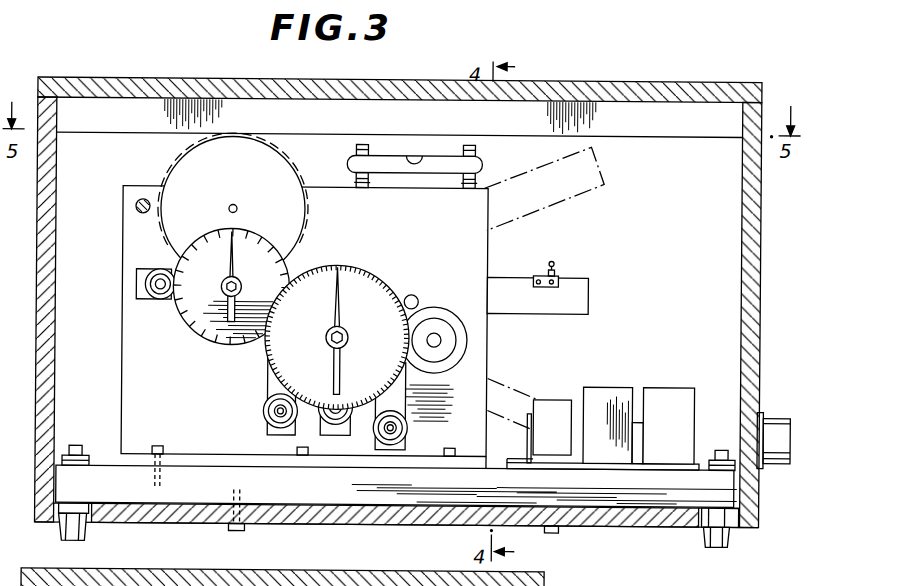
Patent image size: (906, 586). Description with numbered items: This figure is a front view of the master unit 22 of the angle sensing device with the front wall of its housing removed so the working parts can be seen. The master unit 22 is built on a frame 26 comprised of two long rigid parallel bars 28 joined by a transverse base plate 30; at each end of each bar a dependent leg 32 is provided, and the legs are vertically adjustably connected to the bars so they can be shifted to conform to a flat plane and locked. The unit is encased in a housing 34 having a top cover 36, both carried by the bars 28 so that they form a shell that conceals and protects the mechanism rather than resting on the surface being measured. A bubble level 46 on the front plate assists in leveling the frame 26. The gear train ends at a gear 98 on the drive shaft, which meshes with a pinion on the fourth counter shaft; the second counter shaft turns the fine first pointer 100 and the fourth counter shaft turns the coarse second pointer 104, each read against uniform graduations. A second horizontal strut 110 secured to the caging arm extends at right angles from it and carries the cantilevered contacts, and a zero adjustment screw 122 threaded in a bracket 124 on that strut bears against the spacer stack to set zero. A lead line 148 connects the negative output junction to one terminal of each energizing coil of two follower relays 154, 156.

The master unit 22 is at (688, 535).
The frame 26 is at (102, 464).
The bars 28 is at (405, 496).
The base plate 30 is at (219, 432).
The dependent leg 32 is at (726, 536).
The housing 34 is at (760, 289).
The top cover 36 is at (710, 90).
The bubble level 46 is at (415, 152).
The gear 98 is at (298, 171).
The first pointer 100 is at (342, 317).
The second pointer 104 is at (237, 262).
The second horizontal strut 110 is at (600, 163).
The zero adjustment screw 122 is at (557, 261).
The bracket 124 is at (540, 272).
The lead line 148 is at (558, 397).
The follower relay 154 is at (612, 390).
The follower relay 156 is at (684, 396).